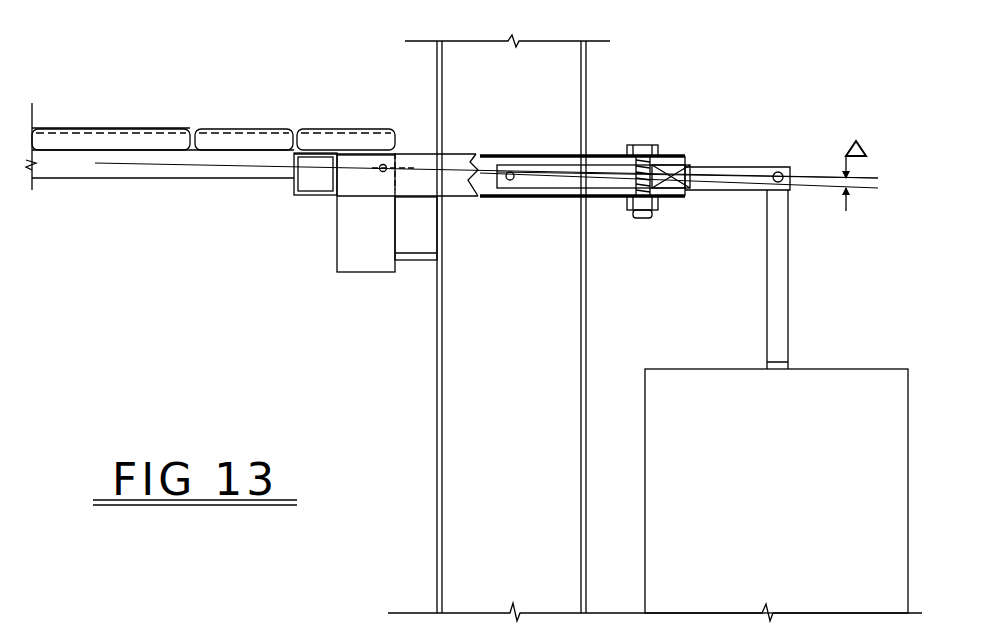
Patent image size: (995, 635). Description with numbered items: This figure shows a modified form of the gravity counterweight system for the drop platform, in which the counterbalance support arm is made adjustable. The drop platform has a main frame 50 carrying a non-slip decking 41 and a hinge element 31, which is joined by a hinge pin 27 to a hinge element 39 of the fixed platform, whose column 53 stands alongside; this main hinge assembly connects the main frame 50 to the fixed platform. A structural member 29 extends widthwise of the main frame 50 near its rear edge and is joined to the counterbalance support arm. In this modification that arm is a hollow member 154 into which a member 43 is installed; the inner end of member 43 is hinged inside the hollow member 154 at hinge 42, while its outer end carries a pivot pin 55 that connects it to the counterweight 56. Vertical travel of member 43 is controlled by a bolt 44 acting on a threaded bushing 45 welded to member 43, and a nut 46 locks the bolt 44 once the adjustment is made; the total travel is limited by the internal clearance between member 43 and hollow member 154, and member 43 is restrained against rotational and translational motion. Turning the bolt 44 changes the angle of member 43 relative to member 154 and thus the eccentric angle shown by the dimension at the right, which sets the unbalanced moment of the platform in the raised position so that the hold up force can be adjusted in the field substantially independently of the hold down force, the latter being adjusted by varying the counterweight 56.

The hinge pin 27 is at (388, 160).
The structural member 29 is at (310, 197).
The hinge element 31 is at (370, 275).
The hinge element 39 is at (425, 263).
The decking 41 is at (174, 127).
The hinge 42 is at (516, 184).
The member 43 is at (550, 190).
The bolt 44 is at (631, 145).
The threaded bushing 45 is at (662, 176).
The nut 46 is at (663, 205).
The main frame 50 is at (208, 187).
The column 53 is at (587, 90).
The pivot pin 55 is at (778, 169).
The counterweight 56 is at (853, 368).
The hollow member 154 is at (462, 157).